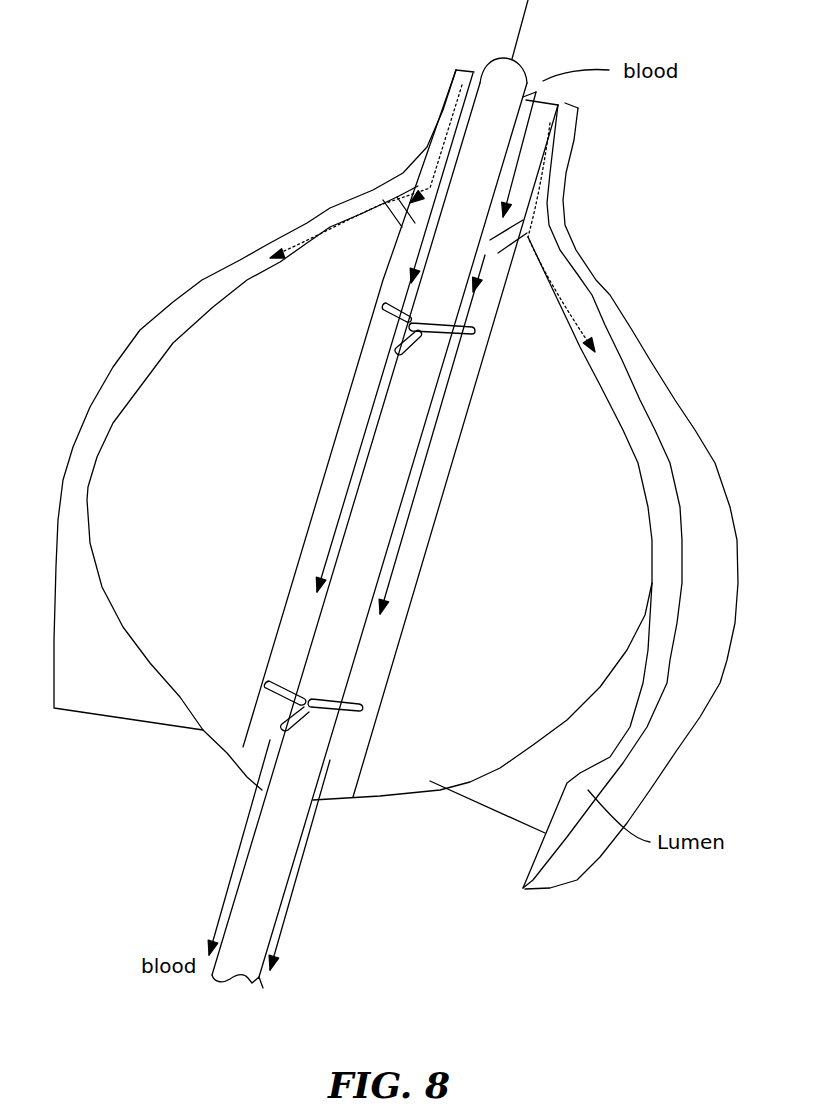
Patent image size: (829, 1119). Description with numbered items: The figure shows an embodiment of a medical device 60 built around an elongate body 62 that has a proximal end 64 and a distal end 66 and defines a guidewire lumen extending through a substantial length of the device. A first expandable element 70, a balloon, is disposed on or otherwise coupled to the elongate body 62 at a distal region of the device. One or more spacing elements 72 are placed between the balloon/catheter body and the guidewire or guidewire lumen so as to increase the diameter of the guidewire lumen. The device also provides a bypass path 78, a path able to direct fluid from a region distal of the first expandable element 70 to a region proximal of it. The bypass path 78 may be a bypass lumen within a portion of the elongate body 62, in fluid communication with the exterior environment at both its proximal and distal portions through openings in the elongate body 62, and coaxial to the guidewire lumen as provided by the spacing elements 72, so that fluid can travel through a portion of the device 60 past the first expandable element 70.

The medical device 60 is at (672, 316).
The elongate body 62 is at (273, 927).
The proximal end 64 is at (262, 985).
The distal end 66 is at (465, 68).
The first expandable element 70 is at (405, 792).
The spacing element 72 is at (390, 321).
The bypass path 78 is at (450, 393).